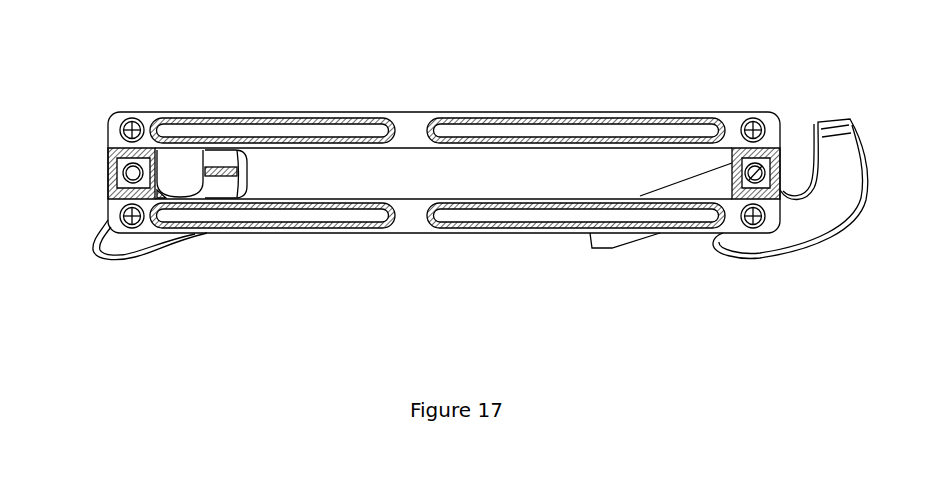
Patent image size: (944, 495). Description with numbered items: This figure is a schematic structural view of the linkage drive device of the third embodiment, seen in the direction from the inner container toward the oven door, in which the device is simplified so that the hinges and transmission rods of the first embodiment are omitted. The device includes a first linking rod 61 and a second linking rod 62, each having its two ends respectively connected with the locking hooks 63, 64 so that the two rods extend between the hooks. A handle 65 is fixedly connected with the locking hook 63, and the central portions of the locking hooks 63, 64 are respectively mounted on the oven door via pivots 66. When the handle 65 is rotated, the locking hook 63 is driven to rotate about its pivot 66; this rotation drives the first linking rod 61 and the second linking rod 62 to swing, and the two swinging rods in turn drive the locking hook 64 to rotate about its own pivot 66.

The first linking rod 61 is at (322, 112).
The second linking rod 62 is at (287, 231).
The locking hook 63 is at (808, 227).
The locking hook 64 is at (135, 243).
The handle 65 is at (610, 248).
The pivot 66 is at (123, 171).